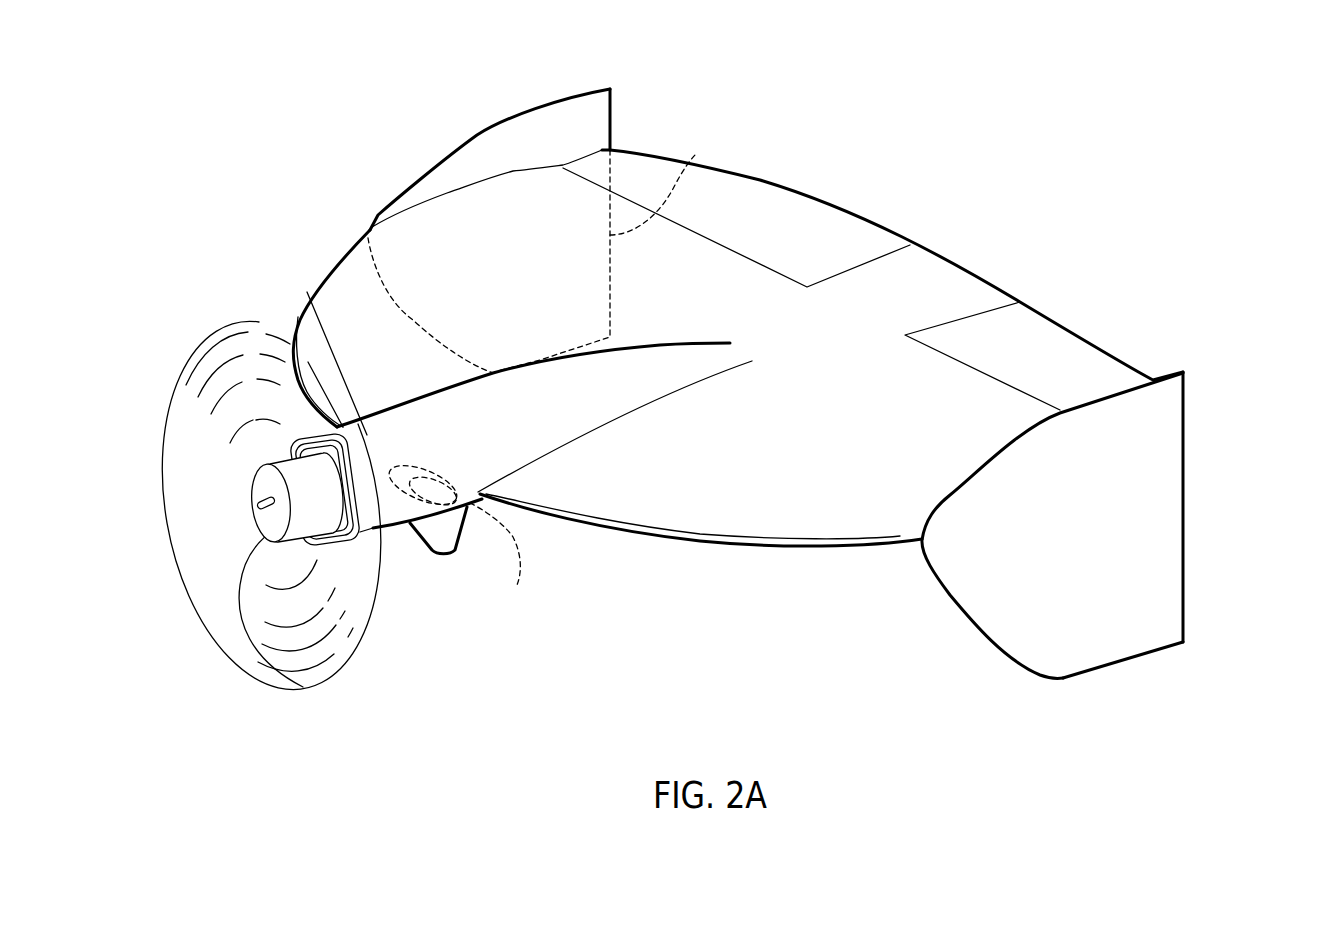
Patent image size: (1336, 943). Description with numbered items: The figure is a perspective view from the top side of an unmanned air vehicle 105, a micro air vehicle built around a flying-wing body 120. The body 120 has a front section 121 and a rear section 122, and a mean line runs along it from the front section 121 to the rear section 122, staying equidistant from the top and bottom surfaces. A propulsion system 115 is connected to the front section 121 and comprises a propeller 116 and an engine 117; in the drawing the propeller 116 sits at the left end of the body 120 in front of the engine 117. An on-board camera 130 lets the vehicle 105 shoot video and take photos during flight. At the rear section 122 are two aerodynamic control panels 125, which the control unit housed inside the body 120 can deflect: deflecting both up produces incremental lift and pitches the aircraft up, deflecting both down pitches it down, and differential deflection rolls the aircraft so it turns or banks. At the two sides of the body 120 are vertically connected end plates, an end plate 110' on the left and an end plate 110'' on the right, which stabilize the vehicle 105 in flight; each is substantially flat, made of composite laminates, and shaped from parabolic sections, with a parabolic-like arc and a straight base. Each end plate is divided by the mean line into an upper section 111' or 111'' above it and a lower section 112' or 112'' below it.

The unmanned air vehicle 105 is at (990, 147).
The body 120 is at (333, 258).
The end plate 110'' is at (490, 154).
The upper section 111'' is at (658, 114).
The lower section 112'' is at (682, 189).
The rear section 122 is at (943, 278).
The aerodynamic control panels 125 is at (855, 235).
The end plate 110' is at (1097, 513).
The upper section 111' is at (1218, 507).
The lower section 112' is at (1169, 648).
The front section 121 is at (593, 485).
The camera 130 is at (516, 586).
The propeller 116 is at (345, 668).
The propulsion system 115 is at (203, 593).
The engine 117 is at (310, 296).